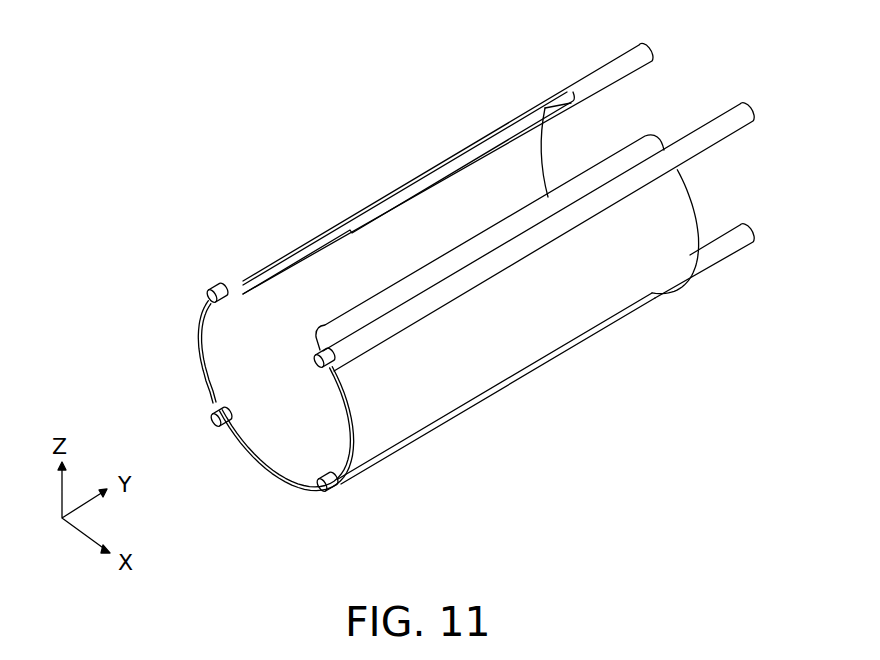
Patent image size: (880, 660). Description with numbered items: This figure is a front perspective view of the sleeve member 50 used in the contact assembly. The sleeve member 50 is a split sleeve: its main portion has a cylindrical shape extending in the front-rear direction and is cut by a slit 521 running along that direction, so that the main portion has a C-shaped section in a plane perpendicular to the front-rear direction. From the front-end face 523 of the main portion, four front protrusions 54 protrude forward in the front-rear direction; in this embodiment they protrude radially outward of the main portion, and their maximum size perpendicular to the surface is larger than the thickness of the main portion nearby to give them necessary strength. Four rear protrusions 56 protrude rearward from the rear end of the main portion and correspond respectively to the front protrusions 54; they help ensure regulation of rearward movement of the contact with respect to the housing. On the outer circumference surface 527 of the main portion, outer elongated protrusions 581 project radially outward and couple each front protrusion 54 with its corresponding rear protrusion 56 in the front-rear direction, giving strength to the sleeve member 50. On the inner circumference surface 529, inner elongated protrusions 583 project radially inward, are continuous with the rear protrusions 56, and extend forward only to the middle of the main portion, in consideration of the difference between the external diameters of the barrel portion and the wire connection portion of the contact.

The sleeve member 50 is at (391, 32).
The slit 521 is at (442, 211).
The front-end face 523 is at (262, 468).
The outer circumference surface 527 is at (391, 364).
The inner circumference surface 529 is at (262, 343).
The front protrusion 54 is at (205, 292).
The rear protrusion 56 is at (701, 133).
The outer elongated protrusion 581 is at (460, 285).
The inner elongated protrusion 583 is at (456, 127).